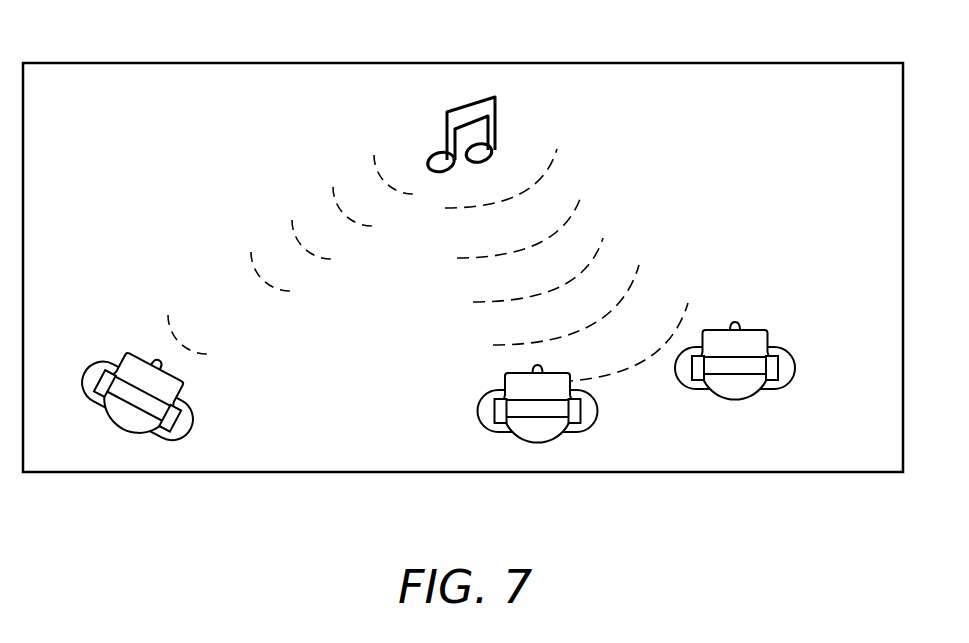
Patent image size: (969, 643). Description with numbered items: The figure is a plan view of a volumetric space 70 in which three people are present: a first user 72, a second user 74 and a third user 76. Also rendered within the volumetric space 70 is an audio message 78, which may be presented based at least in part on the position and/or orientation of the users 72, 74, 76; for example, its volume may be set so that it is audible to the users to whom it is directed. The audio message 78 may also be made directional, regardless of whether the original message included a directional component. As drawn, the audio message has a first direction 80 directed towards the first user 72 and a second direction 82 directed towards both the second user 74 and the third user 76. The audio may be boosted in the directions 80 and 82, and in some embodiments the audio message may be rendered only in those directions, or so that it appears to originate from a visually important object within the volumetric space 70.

The volumetric space 70 is at (858, 503).
The first user 72 is at (177, 444).
The second user 74 is at (538, 444).
The third user 76 is at (735, 401).
The audio message 78 is at (470, 103).
The first direction 80 is at (280, 291).
The second direction 82 is at (604, 222).